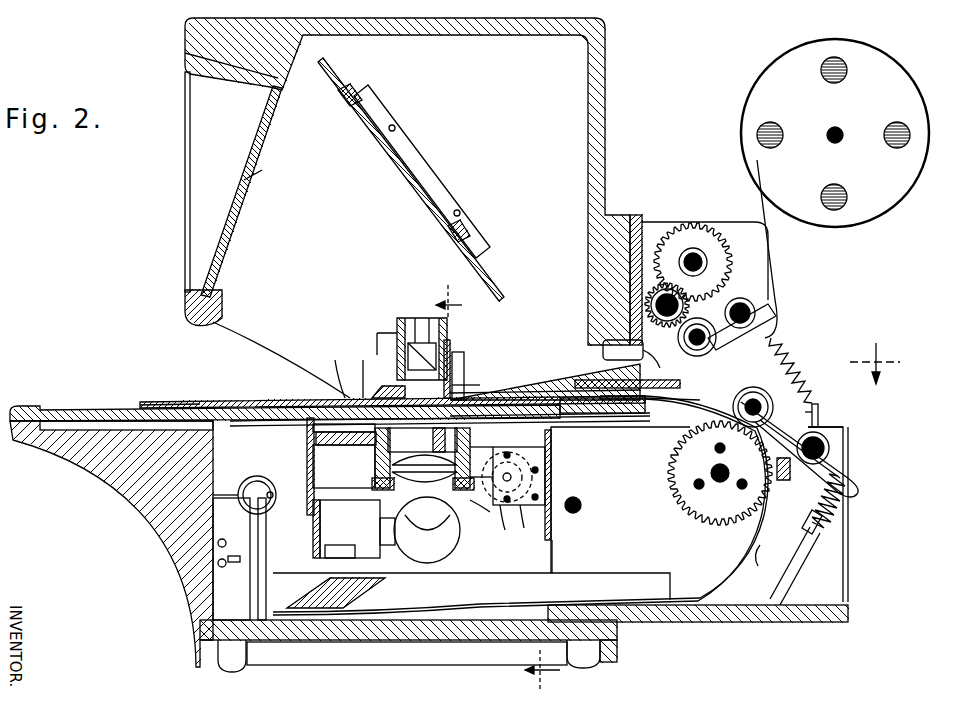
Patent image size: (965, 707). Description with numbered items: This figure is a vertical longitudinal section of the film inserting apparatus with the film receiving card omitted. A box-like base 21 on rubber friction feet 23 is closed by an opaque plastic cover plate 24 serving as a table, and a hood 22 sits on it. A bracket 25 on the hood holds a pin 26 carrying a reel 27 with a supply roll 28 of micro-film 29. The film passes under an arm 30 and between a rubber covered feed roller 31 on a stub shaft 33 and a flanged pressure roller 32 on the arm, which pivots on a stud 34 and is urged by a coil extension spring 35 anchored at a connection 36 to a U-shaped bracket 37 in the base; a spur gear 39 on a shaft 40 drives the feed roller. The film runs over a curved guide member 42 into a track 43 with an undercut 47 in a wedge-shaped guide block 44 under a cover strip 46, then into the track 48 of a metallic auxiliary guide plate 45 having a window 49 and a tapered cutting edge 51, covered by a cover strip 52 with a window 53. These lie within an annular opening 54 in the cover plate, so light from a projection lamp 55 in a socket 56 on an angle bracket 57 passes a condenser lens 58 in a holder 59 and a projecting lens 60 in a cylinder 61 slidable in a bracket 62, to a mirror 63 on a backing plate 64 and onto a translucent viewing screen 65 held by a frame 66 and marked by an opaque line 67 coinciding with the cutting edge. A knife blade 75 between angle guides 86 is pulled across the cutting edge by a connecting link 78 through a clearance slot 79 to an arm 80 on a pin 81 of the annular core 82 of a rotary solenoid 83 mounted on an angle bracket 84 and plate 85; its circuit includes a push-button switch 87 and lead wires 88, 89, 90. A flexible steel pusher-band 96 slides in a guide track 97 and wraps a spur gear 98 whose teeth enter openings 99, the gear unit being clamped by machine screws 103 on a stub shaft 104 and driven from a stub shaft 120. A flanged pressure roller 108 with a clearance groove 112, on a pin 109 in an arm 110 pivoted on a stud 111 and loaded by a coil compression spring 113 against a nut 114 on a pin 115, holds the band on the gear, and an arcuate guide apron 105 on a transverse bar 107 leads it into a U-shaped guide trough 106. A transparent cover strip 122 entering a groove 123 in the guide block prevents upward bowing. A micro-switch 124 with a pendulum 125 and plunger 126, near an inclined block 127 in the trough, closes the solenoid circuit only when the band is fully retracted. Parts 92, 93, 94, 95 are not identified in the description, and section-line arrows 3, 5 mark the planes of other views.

The section line 3- 3 is at (875, 363).
The section line 5- 5 is at (498, 491).
The base 21 is at (160, 505).
The hood 22 is at (607, 45).
The rubber friction feet 23 is at (240, 660).
The plate 24 is at (70, 410).
The bracket 25 is at (650, 232).
The pin 26 is at (842, 142).
The reel 27 is at (775, 70).
The supply roll 28 is at (840, 62).
The film 29 is at (762, 203).
The arm 30 is at (742, 298).
The feed roller 31 is at (680, 300).
The pressure roller 32 is at (708, 350).
The stub shaft 33 is at (660, 283).
The stud 34 is at (772, 305).
The coil extension spring 35 is at (798, 350).
The spring connection 36 is at (818, 410).
The U-shaped bracket 37 is at (838, 590).
The spur gear 39 is at (690, 240).
The shaft 40 is at (704, 258).
The curved guide member 42 is at (662, 361).
The guide track 43 is at (560, 419).
The guide block 44 is at (612, 416).
The auxiliary guide plate 45 is at (615, 413).
The cover strip 46 is at (515, 390).
The undercut 47 is at (552, 380).
The guide track 48 is at (360, 370).
The window 49 is at (405, 428).
The cutting edge 51 is at (430, 439).
The cover strip 52 is at (332, 370).
The window 53 is at (385, 386).
The annular opening 54 is at (344, 425).
The projection lamp 55 is at (445, 555).
The socket 56 is at (350, 545).
The angle bracket 57 is at (307, 458).
The condenser lens 58 is at (418, 481).
The holder 59 is at (375, 455).
The projecting lens 60 is at (425, 340).
The cylinder 61 is at (397, 360).
The bracket 62 is at (396, 322).
The light reflecting element 63 is at (490, 275).
The backing plate 64 is at (480, 230).
The viewing screen 65 is at (267, 171).
The frame 66 is at (228, 72).
The opaque line 67 is at (215, 270).
The knife blade 75 is at (464, 362).
The connecting link 78 is at (468, 375).
The clearance slot 79 is at (493, 440).
The arm 80 is at (515, 447).
The pin 81 is at (510, 477).
The annular core 82 is at (529, 519).
The rotary solenoid 83 is at (474, 487).
The angle bracket 84 is at (491, 521).
The plate 85 is at (552, 468).
The angle guides 86 is at (452, 350).
The push-button electrical switch 87 is at (240, 482).
The lead wire 88 is at (250, 478).
The lead wire 89 is at (471, 510).
The lead wire 90 is at (276, 492).
The cover strip 92 is at (143, 402).
The cover plate 93 is at (232, 404).
The box 94 is at (344, 466).
The pad 95 is at (330, 432).
The pusher-band 96 is at (668, 405).
The guide track 97 is at (590, 423).
The spur gear 98 is at (688, 464).
The openings 99 is at (705, 400).
The machine screws 103 is at (694, 487).
The stub shaft 104 is at (722, 483).
The guide apron 105 is at (758, 566).
The guide trough 106 is at (655, 572).
The transverse bar 107 is at (785, 482).
The pressure roller 108 is at (762, 378).
The pin 109 is at (790, 425).
The arm 110 is at (843, 427).
The stud 111 is at (829, 448).
The annular clearance groove 112 is at (800, 449).
The coil compression spring 113 is at (840, 506).
The nut 114 is at (822, 528).
The pin 115 is at (790, 582).
The stub shaft 120 is at (575, 513).
The cover strip 122 is at (672, 380).
The groove 123 is at (623, 350).
The micro-switch 124 is at (213, 600).
The pendulum 125 is at (250, 604).
The plunger 126 is at (240, 550).
The inclined block 127 is at (360, 600).